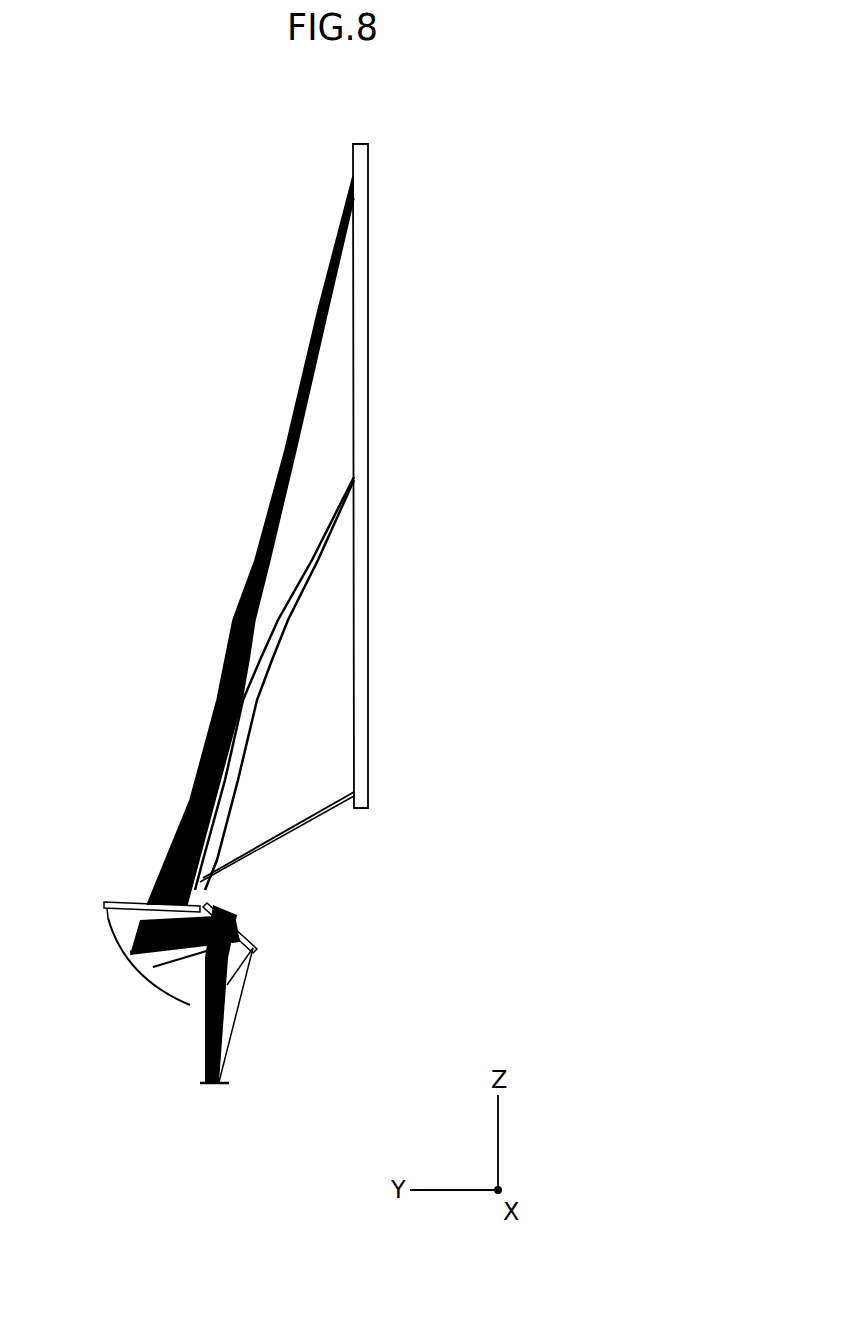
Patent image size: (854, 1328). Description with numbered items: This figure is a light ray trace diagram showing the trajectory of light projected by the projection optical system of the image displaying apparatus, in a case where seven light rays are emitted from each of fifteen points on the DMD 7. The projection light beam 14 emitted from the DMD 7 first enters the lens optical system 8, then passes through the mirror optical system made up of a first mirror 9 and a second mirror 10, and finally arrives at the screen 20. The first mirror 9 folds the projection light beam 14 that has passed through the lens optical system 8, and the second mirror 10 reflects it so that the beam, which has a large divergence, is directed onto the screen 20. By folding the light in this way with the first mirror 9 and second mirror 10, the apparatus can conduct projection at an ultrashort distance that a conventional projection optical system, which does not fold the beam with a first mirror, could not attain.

The screen 20 is at (369, 303).
The projection light beam 14 is at (257, 535).
The second mirror 10 is at (110, 932).
The first mirror 9 is at (245, 935).
The lens optical system 8 is at (240, 973).
The DMD 7 is at (207, 1083).